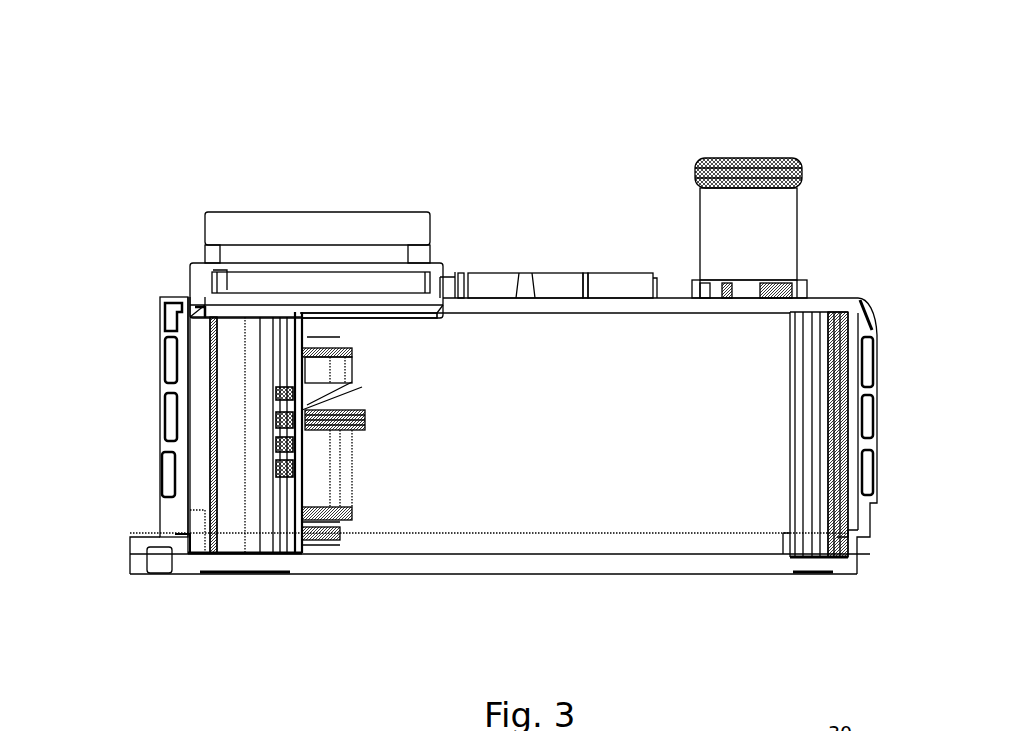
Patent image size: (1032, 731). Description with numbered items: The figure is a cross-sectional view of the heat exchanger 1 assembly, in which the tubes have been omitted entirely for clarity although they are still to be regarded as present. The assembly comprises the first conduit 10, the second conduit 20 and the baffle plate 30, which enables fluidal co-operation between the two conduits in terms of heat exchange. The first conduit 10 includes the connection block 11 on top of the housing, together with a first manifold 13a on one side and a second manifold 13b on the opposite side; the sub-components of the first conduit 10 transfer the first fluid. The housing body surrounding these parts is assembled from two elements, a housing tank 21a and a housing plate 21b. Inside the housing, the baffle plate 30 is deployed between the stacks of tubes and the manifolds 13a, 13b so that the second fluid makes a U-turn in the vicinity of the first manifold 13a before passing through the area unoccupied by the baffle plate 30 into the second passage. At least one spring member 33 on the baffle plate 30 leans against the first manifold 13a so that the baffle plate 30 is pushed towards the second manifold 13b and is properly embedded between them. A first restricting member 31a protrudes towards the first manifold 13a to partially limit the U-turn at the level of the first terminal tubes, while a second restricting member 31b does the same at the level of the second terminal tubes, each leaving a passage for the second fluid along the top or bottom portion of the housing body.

The heat exchanger 1 is at (511, 172).
The first conduit 10 is at (243, 178).
The connection block 11 is at (277, 222).
The second conduit 20 is at (748, 152).
The baffle plate 30 is at (663, 513).
The first manifold 13a is at (237, 510).
The second manifold 13b is at (807, 530).
The housing tank 21a is at (185, 415).
The housing plate 21b is at (130, 535).
The first restricting member 31a is at (315, 338).
The second restricting member 31b is at (337, 530).
The spring member 33 is at (338, 395).